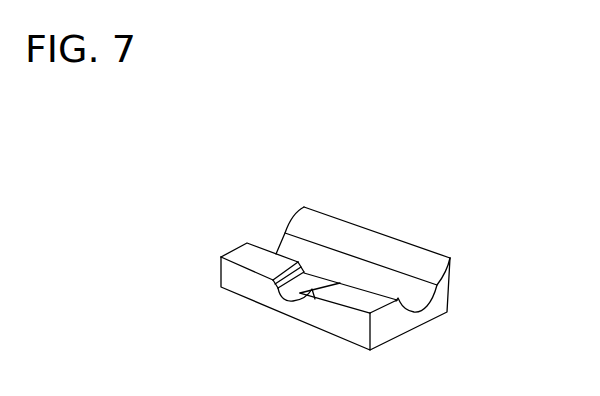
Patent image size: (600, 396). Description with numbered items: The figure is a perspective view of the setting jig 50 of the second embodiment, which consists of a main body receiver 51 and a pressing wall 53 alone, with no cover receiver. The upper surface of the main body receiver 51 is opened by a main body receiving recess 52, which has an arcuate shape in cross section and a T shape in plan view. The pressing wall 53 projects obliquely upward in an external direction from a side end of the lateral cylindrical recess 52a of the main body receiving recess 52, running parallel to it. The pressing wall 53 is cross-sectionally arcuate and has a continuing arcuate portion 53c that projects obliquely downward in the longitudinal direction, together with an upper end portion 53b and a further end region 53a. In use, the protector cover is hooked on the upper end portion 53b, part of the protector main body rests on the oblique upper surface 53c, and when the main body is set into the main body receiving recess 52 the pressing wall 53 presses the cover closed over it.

The setting jig 50 is at (212, 228).
The main body receiver 51 is at (425, 321).
The main body receiving recess 52 is at (308, 253).
The lateral cylindrical recess 52a is at (328, 266).
The pressing wall 53 is at (456, 260).
The rail end face 53a is at (457, 273).
The upper end portion 53b is at (417, 243).
The continuing arcuate portion 53c is at (372, 246).